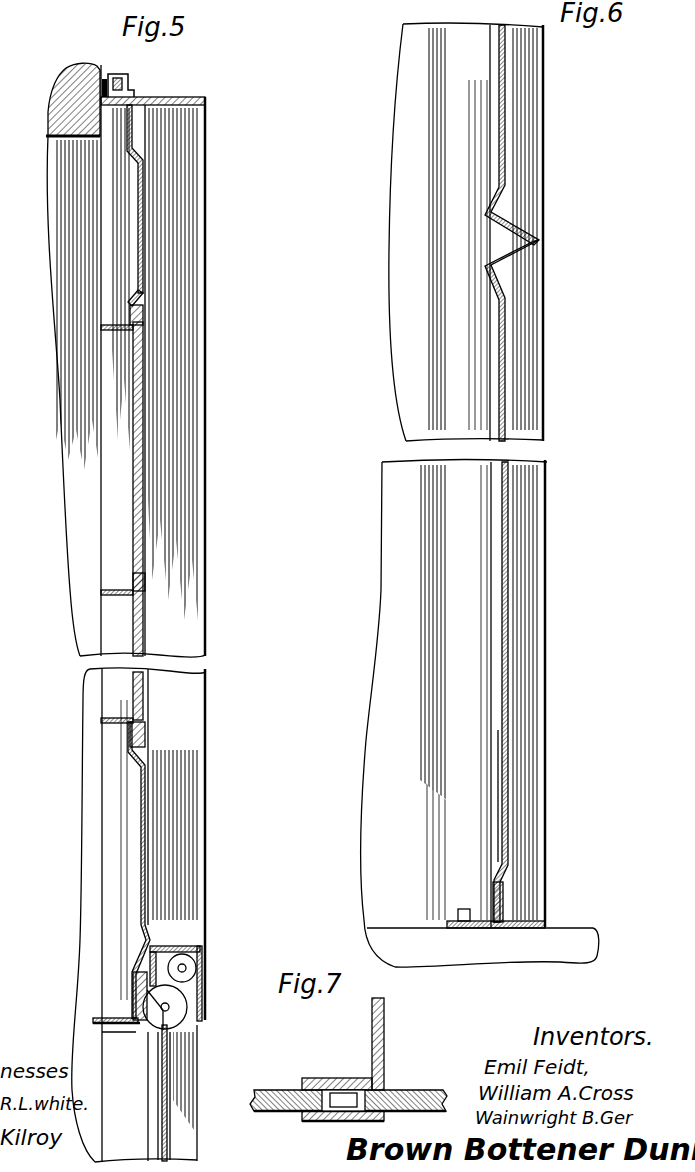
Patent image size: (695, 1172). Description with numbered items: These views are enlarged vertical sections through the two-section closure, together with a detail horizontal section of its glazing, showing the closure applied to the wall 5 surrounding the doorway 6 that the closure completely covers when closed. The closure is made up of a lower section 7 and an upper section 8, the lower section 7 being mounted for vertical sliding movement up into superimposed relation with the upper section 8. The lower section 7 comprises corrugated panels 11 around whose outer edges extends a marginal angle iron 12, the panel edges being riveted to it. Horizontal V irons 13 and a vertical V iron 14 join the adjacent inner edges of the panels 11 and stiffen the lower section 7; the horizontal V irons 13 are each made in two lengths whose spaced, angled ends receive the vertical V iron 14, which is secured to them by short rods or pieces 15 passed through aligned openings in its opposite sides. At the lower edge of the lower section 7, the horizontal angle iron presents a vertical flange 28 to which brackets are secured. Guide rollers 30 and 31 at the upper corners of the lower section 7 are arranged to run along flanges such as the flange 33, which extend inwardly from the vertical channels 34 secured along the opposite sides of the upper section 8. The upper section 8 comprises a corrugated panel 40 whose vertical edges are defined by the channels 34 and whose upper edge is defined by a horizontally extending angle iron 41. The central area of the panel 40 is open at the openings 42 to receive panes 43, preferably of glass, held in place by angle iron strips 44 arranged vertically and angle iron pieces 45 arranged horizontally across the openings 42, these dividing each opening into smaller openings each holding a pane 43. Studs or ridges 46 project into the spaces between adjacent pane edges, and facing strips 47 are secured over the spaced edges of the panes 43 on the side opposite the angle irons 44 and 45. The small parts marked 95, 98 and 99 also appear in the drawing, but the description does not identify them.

In FIG. 5, the wall 5 is at (70, 87).
In FIG. 5, the doorway 6 is at (68, 187).
In FIG. 5, the lower section 7 is at (190, 1108).
In FIG. 5, the upper section 8 is at (160, 498).
In FIG. 5, the panels 11 is at (168, 1064).
In FIG. 6, the panels 11 is at (505, 765).
In FIG. 5, the angle iron 12 is at (163, 947).
In FIG. 6, the horizontal V irons 13 is at (520, 235).
In FIG. 7, the horizontal V irons 13 is at (348, 1130).
In FIG. 6, the vertical V iron 14 is at (535, 805).
In FIG. 6, the short rods 15 is at (538, 250).
In FIG. 6, the vertical flange 28 is at (505, 900).
In FIG. 5, the guide roller 30 is at (180, 1022).
In FIG. 5, the guide roller 31 is at (195, 975).
In FIG. 5, the flange 33 is at (203, 883).
In FIG. 5, the vertical channels 34 is at (190, 815).
In FIG. 5, the corrugated panel 40 is at (138, 180).
In FIG. 5, the angle iron 41 is at (170, 100).
In FIG. 5, the openings 42 is at (137, 310).
In FIG. 5, the panes 43 is at (140, 440).
In FIG. 7, the angle iron strips 44 is at (372, 1037).
In FIG. 5, the angle iron pieces 45 is at (115, 328).
In FIG. 7, the studs 46 is at (361, 1084).
In FIG. 7, the facing strips 47 is at (328, 1114).
In FIG. 6, the stop 95 is at (463, 909).
In FIG. 5, the clip 98 is at (122, 83).
In FIG. 5, the clip lip 99 is at (106, 78).